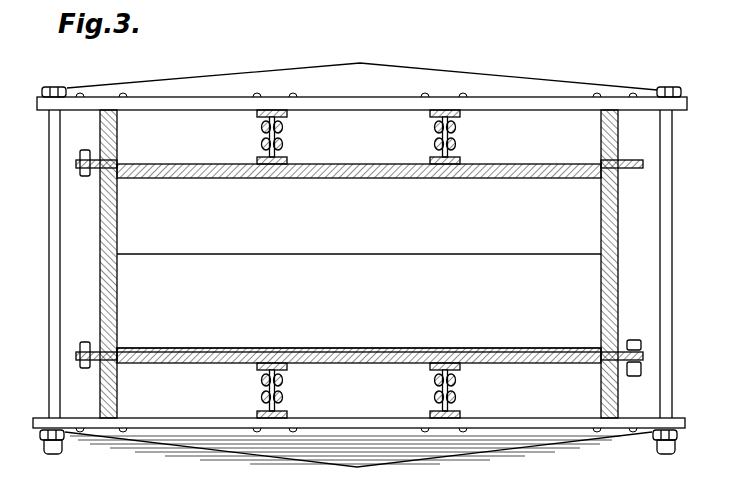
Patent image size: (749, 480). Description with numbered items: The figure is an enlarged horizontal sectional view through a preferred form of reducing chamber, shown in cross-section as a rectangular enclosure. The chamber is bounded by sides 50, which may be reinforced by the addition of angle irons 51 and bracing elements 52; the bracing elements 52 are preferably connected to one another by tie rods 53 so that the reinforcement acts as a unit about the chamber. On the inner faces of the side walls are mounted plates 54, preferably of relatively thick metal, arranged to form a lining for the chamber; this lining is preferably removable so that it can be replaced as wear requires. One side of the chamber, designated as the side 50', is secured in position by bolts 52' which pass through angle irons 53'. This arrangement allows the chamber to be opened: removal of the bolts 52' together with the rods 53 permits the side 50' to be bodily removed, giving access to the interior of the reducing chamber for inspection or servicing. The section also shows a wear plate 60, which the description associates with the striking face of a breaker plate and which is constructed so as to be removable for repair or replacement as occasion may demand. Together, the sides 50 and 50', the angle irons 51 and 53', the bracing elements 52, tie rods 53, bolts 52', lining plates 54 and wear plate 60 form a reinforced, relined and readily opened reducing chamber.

The side 50 is at (359, 259).
The removable side 50' is at (359, 371).
The angle iron 51 is at (455, 142).
The bracing element 52 is at (360, 256).
The bolt 52' is at (670, 342).
The tie rod 53 is at (363, 270).
The angle iron 53' is at (670, 371).
The plate 54 is at (300, 178).
The wear plate 60 is at (137, 300).